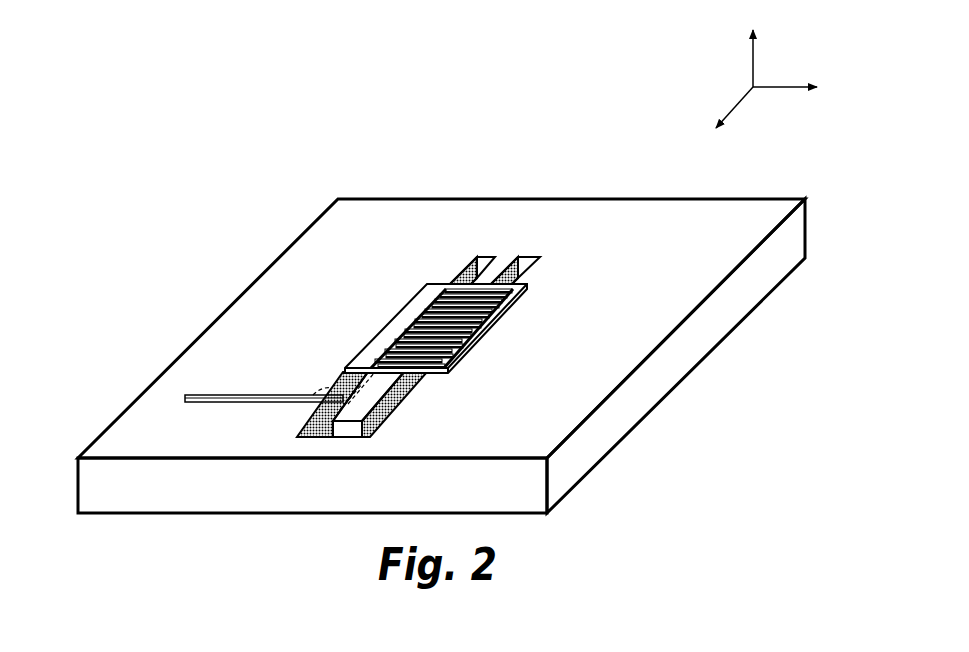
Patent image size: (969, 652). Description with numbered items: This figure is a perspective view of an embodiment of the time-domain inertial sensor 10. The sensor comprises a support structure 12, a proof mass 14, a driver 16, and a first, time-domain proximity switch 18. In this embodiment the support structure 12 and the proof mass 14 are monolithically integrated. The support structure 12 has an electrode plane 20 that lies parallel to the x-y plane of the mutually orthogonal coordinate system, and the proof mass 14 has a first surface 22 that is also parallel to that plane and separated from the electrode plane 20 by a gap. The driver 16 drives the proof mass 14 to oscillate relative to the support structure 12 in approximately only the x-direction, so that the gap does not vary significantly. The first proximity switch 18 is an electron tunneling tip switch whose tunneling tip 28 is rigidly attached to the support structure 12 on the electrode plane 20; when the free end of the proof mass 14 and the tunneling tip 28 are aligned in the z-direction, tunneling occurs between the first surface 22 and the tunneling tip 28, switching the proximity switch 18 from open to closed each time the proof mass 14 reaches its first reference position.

The time-domain inertial sensor 10 is at (128, 93).
The support structure 12 is at (421, 198).
The proof mass 14 is at (372, 414).
The driver 16 is at (507, 318).
The first time-domain proximity switch 18 is at (325, 403).
The electrode plane 20 is at (354, 295).
The first surface 22 is at (378, 393).
The tunneling tip 28 is at (338, 396).